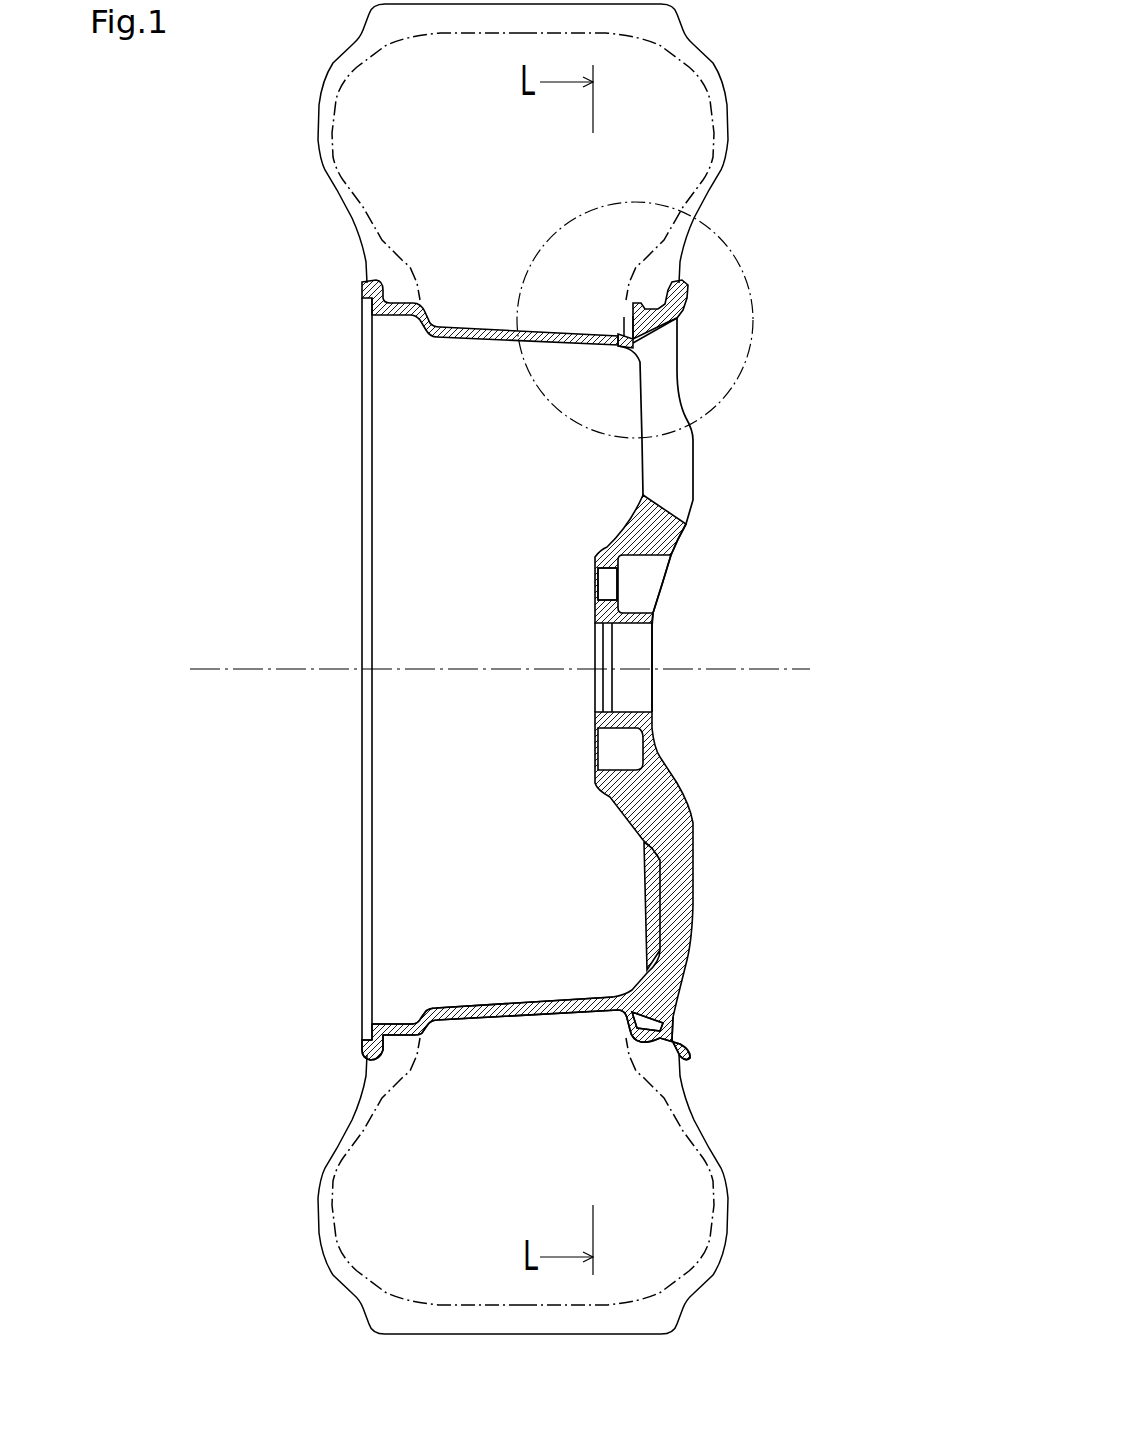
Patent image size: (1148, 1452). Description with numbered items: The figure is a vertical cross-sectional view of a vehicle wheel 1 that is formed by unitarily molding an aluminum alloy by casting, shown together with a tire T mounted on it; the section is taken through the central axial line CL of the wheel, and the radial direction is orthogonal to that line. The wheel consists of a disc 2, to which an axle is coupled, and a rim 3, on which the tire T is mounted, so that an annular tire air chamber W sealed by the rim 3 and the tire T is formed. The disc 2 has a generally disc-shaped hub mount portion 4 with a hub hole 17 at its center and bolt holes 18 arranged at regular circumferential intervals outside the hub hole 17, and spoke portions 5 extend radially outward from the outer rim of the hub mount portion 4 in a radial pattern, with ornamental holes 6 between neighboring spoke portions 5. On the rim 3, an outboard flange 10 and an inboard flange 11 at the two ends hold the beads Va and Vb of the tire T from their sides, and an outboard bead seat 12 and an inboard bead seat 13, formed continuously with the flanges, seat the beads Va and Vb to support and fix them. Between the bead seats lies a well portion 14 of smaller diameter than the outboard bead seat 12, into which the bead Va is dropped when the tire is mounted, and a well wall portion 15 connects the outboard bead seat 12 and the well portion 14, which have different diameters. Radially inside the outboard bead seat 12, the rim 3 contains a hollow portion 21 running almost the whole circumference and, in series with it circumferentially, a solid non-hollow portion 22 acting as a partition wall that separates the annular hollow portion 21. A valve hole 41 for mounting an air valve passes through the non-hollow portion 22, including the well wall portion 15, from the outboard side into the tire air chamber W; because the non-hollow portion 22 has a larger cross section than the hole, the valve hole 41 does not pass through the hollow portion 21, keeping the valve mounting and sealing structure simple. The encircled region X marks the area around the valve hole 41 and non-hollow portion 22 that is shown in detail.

The vehicle wheel 1 is at (765, 445).
The disc 2 is at (685, 537).
The rim 3 is at (475, 322).
The hub mount portion 4 is at (595, 603).
The spoke portion 5 is at (685, 843).
The ornamental hole 6 is at (665, 470).
The outboard flange 10 is at (690, 1057).
The inboard flange 11 is at (363, 1053).
The outboard bead seat 12 is at (640, 1040).
The inboard bead seat 13 is at (382, 1022).
The well portion 14 is at (578, 997).
The well wall portion 15 is at (635, 1023).
The hub hole 17 is at (605, 647).
The bolt hole 18 is at (610, 580).
The hollow portion 21 is at (667, 1013).
The non-hollow portion 22 is at (673, 317).
The valve hole 41 is at (627, 323).
The tire T is at (333, 72).
The tire air chamber W is at (693, 110).
The enlarged portion X is at (743, 270).
The central axial line CL is at (245, 662).
The bead Va is at (655, 1065).
The bead Vb is at (395, 1062).